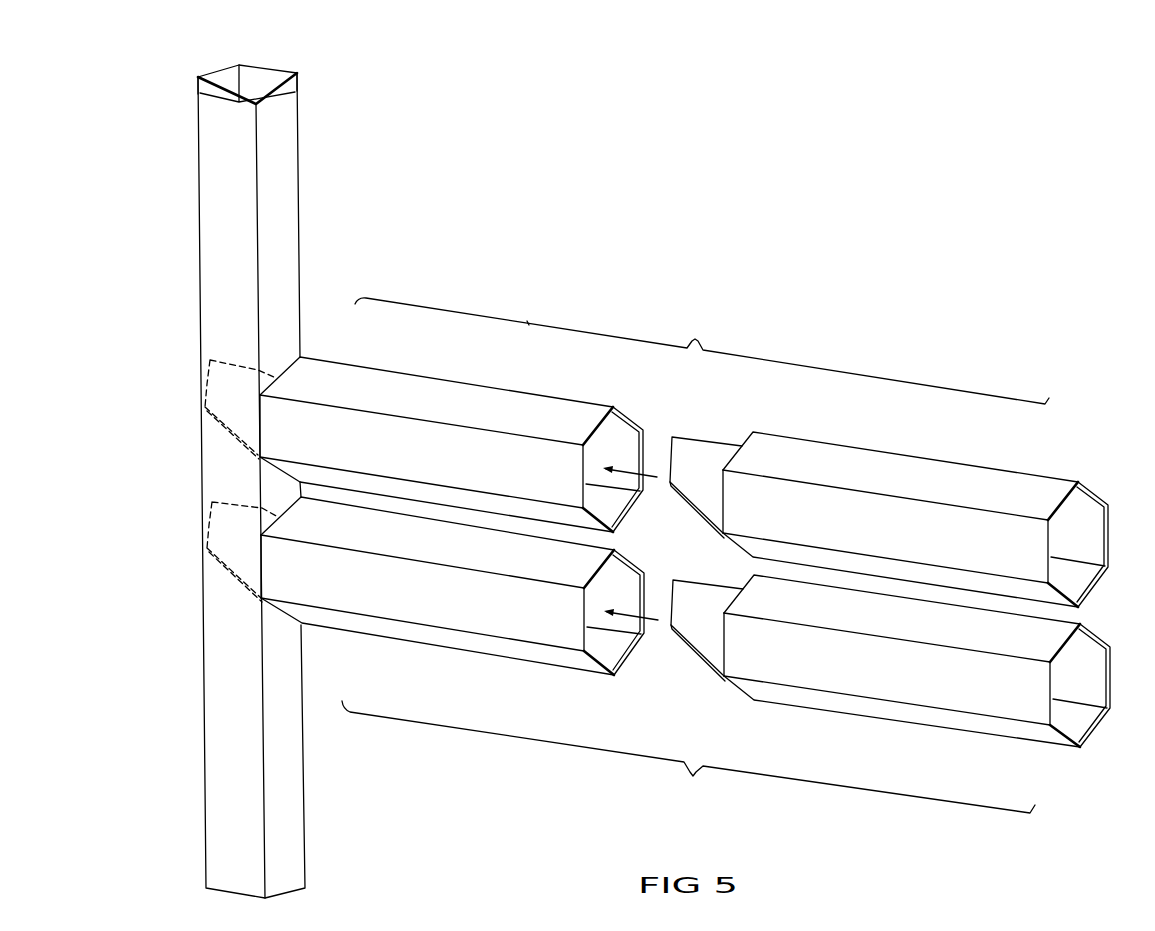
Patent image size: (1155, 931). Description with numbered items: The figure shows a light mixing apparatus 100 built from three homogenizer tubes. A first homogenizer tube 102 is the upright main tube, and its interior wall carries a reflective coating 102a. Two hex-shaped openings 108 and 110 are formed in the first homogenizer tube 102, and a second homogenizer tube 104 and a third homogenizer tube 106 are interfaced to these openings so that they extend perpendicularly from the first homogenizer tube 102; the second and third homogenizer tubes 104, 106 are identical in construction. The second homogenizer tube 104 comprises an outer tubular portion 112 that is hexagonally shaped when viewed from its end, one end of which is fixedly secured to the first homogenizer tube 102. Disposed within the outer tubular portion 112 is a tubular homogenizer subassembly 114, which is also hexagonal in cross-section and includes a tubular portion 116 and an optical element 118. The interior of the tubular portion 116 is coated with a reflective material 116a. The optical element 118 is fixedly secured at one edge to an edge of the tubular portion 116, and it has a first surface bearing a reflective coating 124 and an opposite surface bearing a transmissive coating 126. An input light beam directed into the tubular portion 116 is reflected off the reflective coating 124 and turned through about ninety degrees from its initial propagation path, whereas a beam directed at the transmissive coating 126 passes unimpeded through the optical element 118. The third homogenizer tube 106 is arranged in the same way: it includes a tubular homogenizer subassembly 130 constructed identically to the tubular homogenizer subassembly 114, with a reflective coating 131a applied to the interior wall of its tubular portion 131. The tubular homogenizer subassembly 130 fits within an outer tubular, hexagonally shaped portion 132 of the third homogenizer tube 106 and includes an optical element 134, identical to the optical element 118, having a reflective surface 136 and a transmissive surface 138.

The apparatus 100 is at (407, 207).
The first homogenizer tube 102 is at (296, 474).
The reflective coating 102a is at (268, 87).
The second homogenizer tube 104 is at (425, 375).
The third homogenizer tube 106 is at (502, 656).
The hex-shaped opening 108 is at (458, 425).
The hex-shaped opening 110 is at (459, 593).
The outer tubular portion 112 is at (505, 408).
The tubular homogenizer subassembly 114 is at (864, 489).
The tubular portion 116 is at (1038, 514).
The reflective material 116a is at (1092, 525).
The optical element 118 is at (222, 355).
The reflective coating 124 is at (681, 455).
The transmissive coating 126 is at (693, 505).
The tubular homogenizer subassembly 130 is at (883, 675).
The tubular portion 131 is at (1022, 713).
The reflective coating 131a is at (1098, 680).
The outer tubular, hexagonally shaped portion 132 is at (478, 617).
The optical element 134 is at (222, 498).
The reflective surface 136 is at (705, 645).
The transmissive surface 138 is at (713, 668).